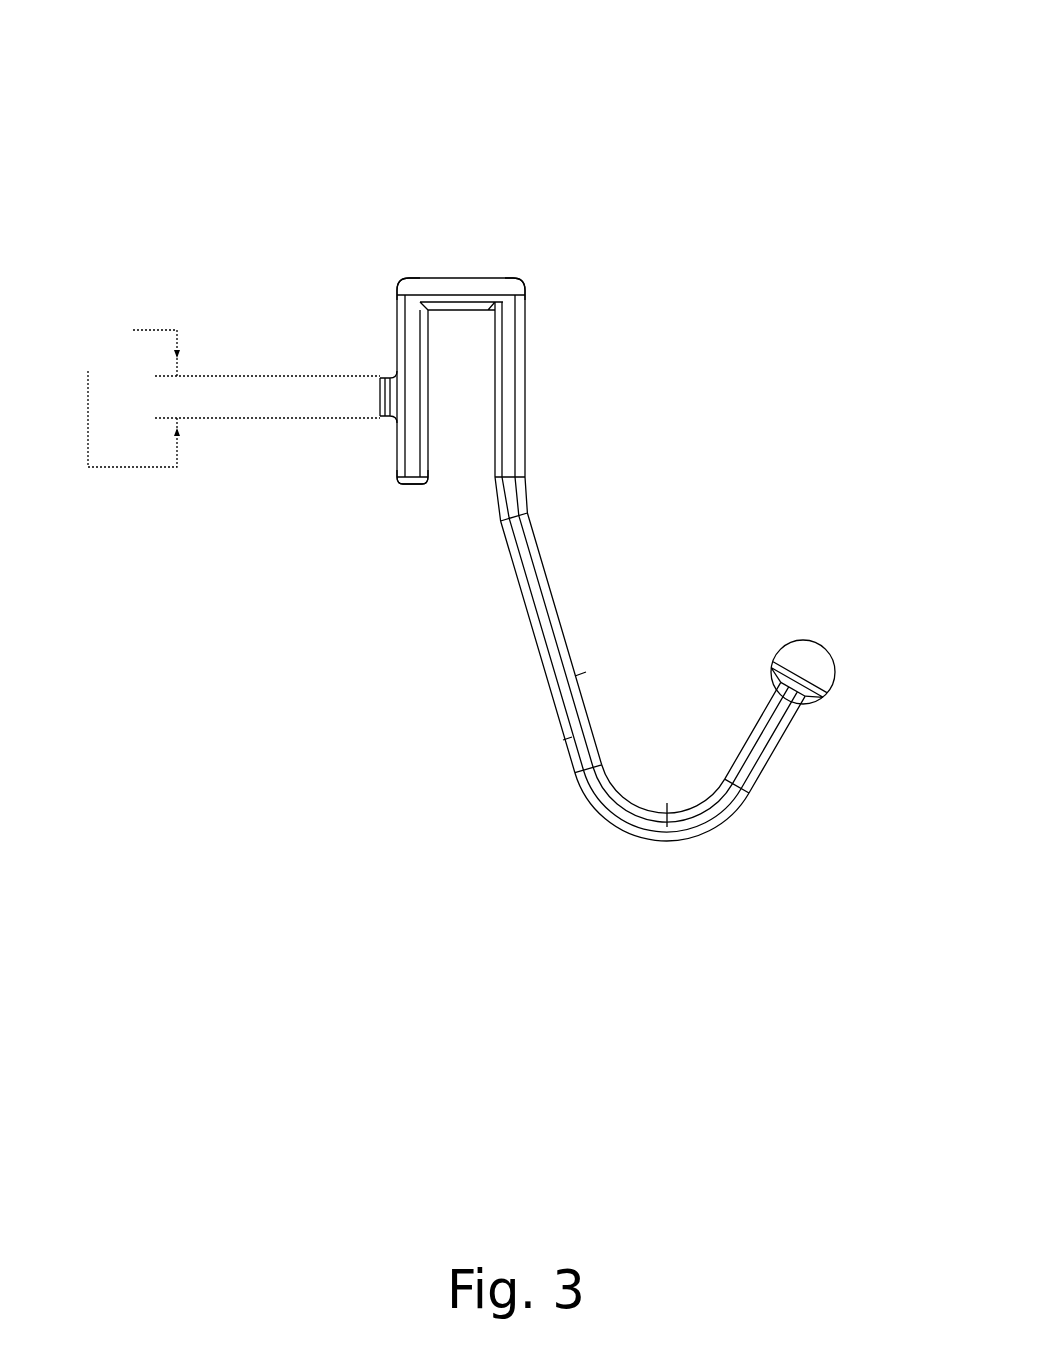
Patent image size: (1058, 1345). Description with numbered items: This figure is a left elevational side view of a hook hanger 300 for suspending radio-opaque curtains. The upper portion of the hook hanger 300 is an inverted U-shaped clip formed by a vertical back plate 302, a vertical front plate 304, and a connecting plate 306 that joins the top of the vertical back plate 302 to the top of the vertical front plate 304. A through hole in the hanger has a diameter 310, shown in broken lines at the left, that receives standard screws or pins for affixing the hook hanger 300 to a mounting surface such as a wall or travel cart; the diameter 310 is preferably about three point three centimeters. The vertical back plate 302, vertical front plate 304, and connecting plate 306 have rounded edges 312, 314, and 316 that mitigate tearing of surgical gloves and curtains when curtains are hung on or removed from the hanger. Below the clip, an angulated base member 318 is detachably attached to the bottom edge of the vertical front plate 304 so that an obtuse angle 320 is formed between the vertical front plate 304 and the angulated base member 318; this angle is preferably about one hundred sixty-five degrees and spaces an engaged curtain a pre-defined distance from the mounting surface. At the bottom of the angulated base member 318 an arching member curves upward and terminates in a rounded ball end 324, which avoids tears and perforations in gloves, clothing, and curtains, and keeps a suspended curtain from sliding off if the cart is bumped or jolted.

The hook hanger 300 is at (908, 30).
The vertical back plate 302 is at (390, 340).
The vertical front plate 304 is at (525, 383).
The connecting plate 306 is at (441, 275).
The diameter 310 is at (225, 385).
The rounded edge 312 is at (387, 287).
The rounded edge 314 is at (535, 278).
The rounded edge 316 is at (388, 483).
The angulated base member 318 is at (578, 660).
The obtuse angle 320 is at (525, 417).
The rounded ball end 324 is at (847, 667).